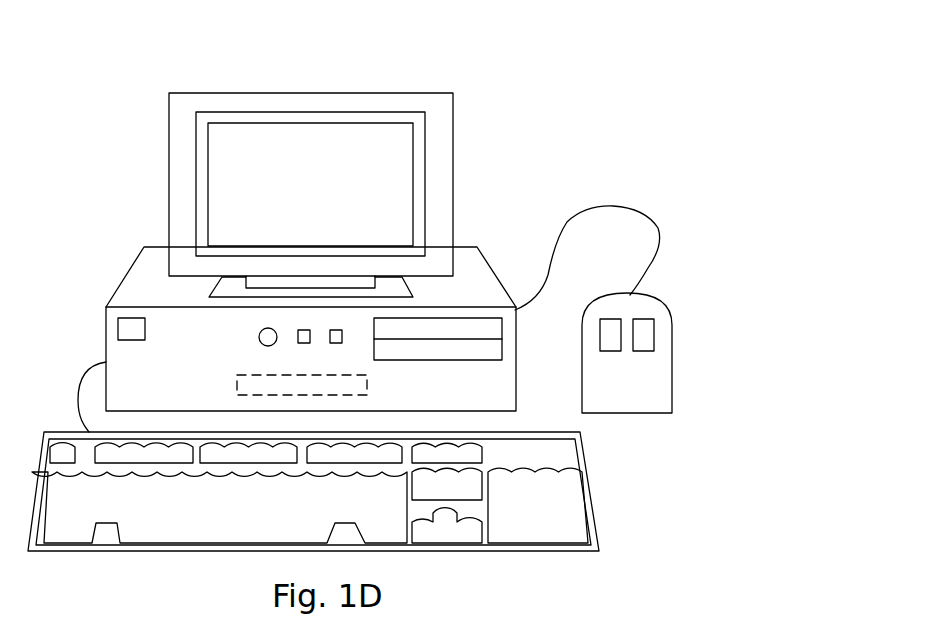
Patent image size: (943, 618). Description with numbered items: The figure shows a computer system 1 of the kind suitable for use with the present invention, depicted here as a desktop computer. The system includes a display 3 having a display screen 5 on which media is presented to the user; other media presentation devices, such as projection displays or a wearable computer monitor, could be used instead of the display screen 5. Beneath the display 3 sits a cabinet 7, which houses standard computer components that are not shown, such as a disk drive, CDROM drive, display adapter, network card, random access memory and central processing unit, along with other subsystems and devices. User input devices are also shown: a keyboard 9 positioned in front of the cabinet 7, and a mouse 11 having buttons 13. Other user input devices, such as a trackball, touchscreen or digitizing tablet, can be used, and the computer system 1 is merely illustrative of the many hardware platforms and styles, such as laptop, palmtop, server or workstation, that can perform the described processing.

The computer system 1 is at (605, 139).
The display 3 is at (452, 182).
The display screen 5 is at (389, 177).
The cabinet 7 is at (470, 283).
The keyboard 9 is at (175, 552).
The mouse 11 is at (653, 382).
The buttons 13 is at (610, 319).